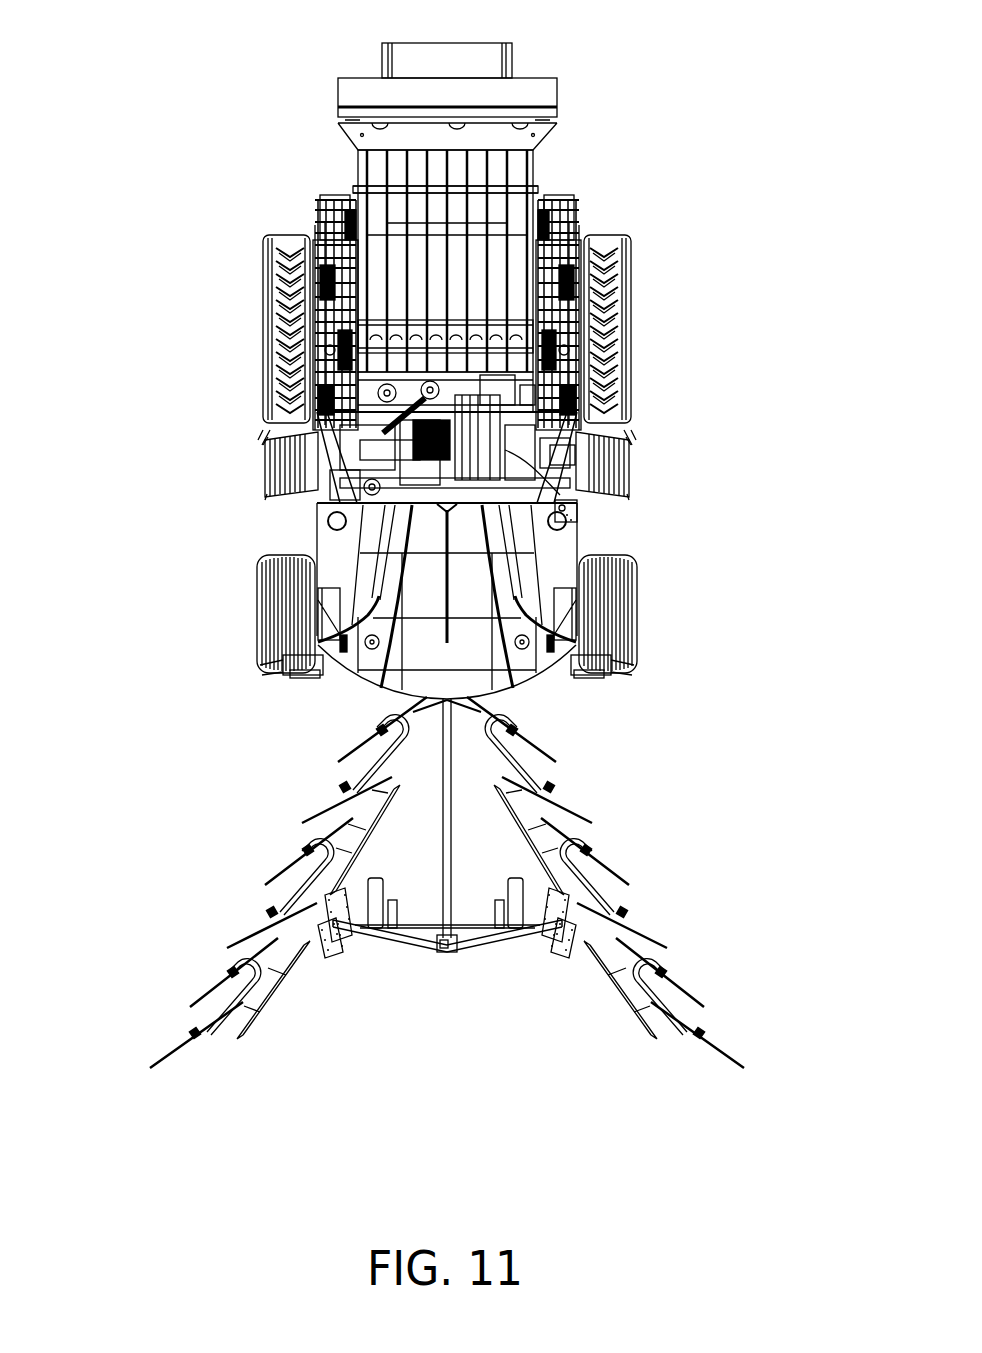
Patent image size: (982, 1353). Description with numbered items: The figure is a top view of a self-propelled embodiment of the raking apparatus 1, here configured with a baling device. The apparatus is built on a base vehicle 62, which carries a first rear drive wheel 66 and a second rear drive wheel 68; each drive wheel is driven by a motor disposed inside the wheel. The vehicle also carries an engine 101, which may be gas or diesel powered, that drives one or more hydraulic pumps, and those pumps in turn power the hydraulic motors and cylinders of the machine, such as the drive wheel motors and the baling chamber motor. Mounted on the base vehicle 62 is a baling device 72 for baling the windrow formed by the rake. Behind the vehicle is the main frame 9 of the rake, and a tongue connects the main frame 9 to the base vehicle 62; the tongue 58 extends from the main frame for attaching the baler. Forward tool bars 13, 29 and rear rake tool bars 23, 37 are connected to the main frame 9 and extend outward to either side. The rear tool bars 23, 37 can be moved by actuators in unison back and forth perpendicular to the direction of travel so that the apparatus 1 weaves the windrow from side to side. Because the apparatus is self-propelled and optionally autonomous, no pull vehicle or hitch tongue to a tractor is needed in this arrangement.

The raking apparatus 1 is at (439, 555).
The main frame 9 is at (473, 953).
The forward tool bar 13 is at (618, 983).
The rear tool bar 23 is at (537, 820).
The forward tool bar 29 is at (278, 987).
The rear tool bar 37 is at (355, 842).
The tongue 58 is at (442, 887).
The base vehicle 62 is at (237, 308).
The first rear drive wheel 66 is at (263, 240).
The second rear drive wheel 68 is at (627, 253).
The baling device 72 is at (533, 168).
The engine 101 is at (563, 508).